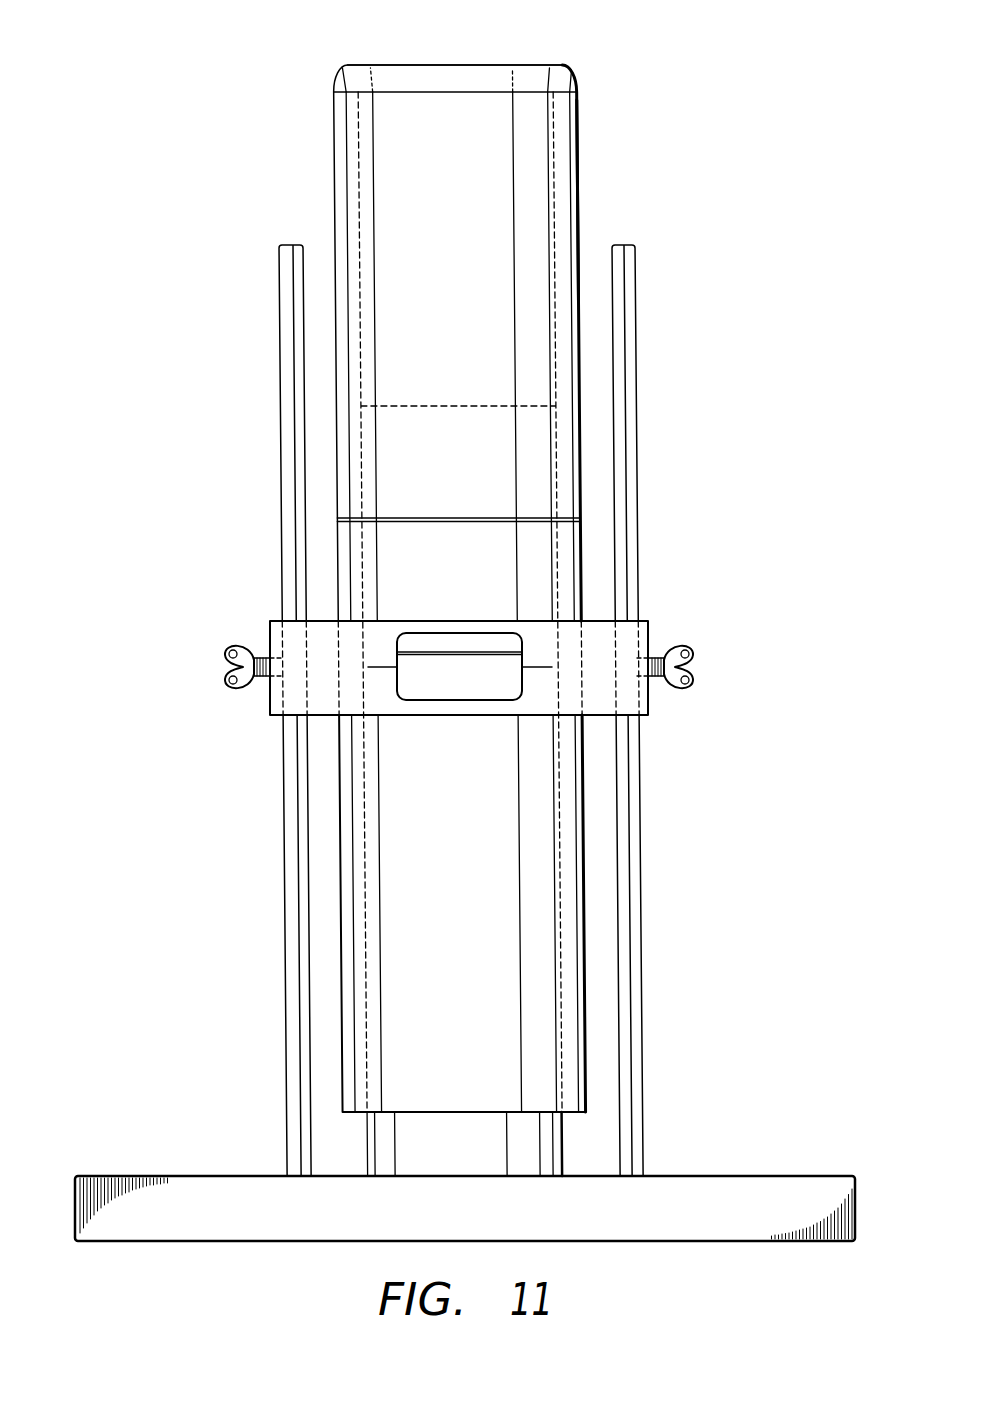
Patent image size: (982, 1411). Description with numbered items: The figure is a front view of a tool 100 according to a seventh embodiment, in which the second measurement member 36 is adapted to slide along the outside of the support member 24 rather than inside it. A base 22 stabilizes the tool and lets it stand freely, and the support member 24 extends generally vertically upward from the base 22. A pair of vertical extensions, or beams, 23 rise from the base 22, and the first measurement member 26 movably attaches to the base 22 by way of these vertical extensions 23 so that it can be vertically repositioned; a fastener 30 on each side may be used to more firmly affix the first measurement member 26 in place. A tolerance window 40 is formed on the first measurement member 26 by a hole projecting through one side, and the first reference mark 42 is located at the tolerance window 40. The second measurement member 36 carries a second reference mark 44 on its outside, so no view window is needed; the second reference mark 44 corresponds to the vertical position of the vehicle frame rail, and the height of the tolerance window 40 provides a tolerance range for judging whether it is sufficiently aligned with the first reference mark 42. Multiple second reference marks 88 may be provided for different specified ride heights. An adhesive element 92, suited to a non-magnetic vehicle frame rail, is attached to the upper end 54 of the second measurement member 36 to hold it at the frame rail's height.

The base 22 is at (728, 1175).
The vertical extensions 23 is at (279, 285).
The support member 24 is at (562, 1063).
The first measurement member 26 is at (652, 700).
The fastener 30 is at (238, 644).
The second measurement member 36 is at (333, 120).
The tolerance window 40 is at (470, 697).
The first reference mark 42 is at (370, 665).
The second reference mark 44 is at (478, 652).
The upper end 54 is at (586, 97).
The multiple second reference marks 88 is at (425, 519).
The adhesive element 92 is at (419, 74).
The tool 100 is at (233, 1001).